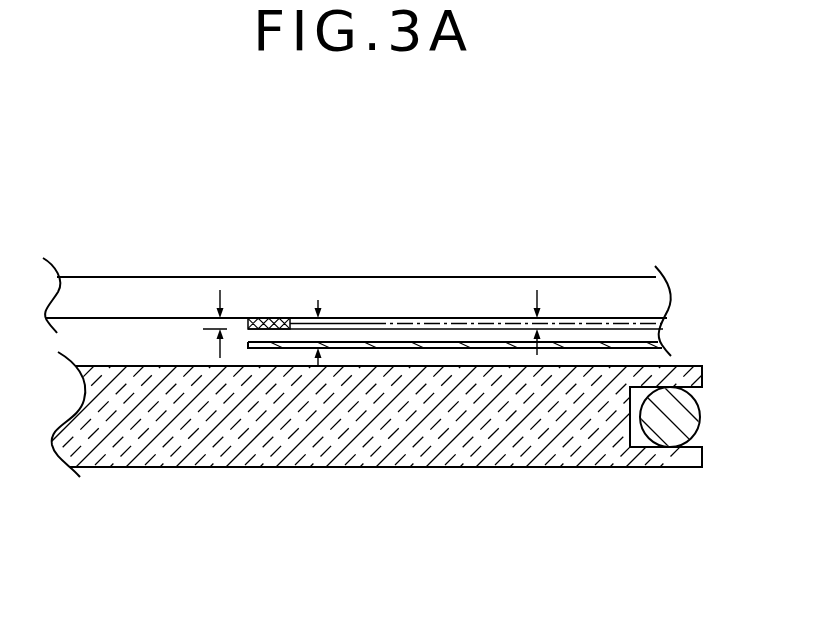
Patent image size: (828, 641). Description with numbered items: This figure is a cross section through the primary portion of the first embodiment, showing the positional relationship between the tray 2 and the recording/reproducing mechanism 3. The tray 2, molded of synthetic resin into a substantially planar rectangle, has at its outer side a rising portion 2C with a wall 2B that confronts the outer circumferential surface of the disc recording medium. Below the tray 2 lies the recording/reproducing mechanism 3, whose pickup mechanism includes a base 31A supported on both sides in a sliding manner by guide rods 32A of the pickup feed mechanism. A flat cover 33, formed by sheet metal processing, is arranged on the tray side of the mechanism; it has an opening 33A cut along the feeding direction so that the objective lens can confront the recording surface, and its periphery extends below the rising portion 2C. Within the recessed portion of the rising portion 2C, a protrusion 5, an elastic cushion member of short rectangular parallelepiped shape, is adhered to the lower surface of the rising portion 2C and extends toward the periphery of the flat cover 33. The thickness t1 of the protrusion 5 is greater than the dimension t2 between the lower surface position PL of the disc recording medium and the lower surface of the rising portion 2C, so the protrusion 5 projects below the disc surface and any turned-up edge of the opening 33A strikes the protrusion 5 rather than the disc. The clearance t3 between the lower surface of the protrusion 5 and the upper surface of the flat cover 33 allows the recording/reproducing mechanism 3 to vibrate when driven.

The tray 2 is at (357, 245).
The wall 2B is at (475, 285).
The rising portion 2C is at (603, 272).
The protrusion 5 is at (270, 322).
The lower surface position PL is at (628, 323).
The flat cover 33 is at (445, 260).
The opening 33A is at (252, 345).
The recording/reproducing mechanism 3 is at (380, 461).
The base 31A is at (417, 467).
The guide rods 32A is at (670, 438).
The thickness of the protrusion t1 is at (207, 329).
The dimension between lower surface position and rising portion t2 is at (541, 318).
The clearance t3 is at (324, 314).